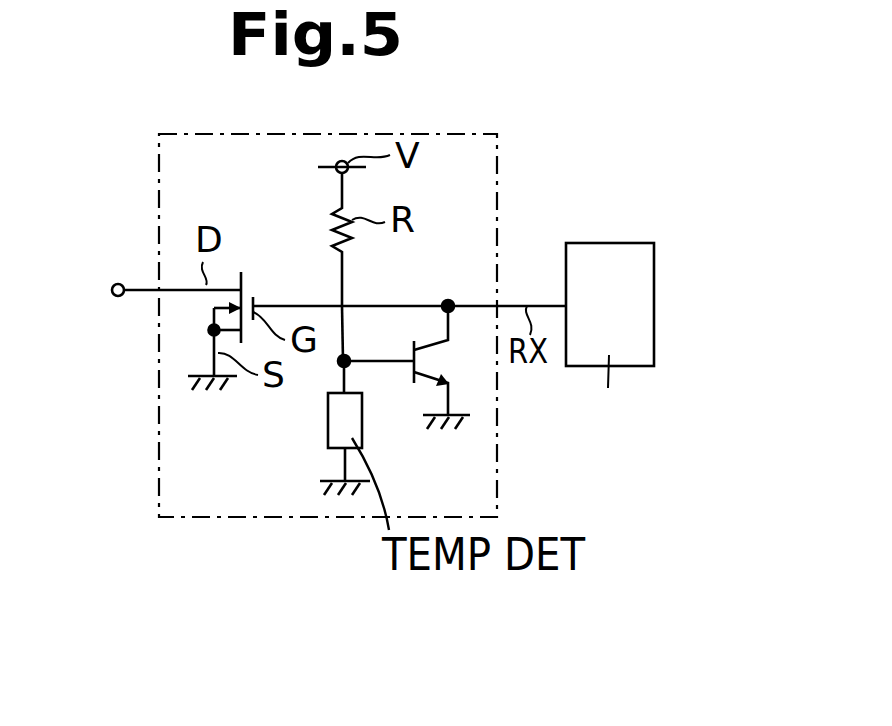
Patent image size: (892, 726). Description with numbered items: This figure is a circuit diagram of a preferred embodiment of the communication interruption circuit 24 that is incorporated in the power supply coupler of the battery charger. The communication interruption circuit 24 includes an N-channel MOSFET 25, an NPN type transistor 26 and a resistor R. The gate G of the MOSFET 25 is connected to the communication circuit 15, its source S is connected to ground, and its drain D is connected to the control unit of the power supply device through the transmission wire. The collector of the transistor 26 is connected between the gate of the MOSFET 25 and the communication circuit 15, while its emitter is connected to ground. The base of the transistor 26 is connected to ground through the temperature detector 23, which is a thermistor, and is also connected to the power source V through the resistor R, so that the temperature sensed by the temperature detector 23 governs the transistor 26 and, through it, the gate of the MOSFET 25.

The communication circuit 15 is at (654, 262).
The temperature detector 23 is at (328, 432).
The communication interruption circuit 24 is at (497, 160).
The N-channel MOSFET 25 is at (194, 313).
The NPN type transistor 26 is at (407, 400).